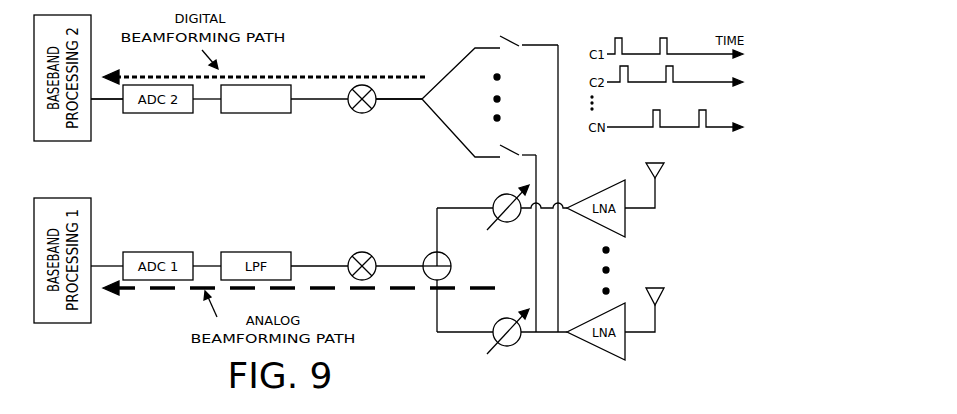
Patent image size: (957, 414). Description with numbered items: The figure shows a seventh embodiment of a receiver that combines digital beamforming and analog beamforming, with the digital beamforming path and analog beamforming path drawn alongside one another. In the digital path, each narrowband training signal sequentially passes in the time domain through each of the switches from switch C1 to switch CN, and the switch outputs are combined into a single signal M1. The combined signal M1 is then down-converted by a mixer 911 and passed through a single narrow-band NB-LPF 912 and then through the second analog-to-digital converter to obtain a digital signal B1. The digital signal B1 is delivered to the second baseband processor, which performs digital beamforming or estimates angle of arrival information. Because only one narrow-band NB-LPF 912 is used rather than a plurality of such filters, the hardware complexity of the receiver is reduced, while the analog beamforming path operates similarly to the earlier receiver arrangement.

The mixer 911 is at (362, 113).
The narrow-band NB-LPF 912 is at (258, 113).
The digital signal B1 is at (115, 112).
The combined signal M1 is at (405, 112).
The switch C1 is at (514, 12).
The switch CN is at (514, 127).